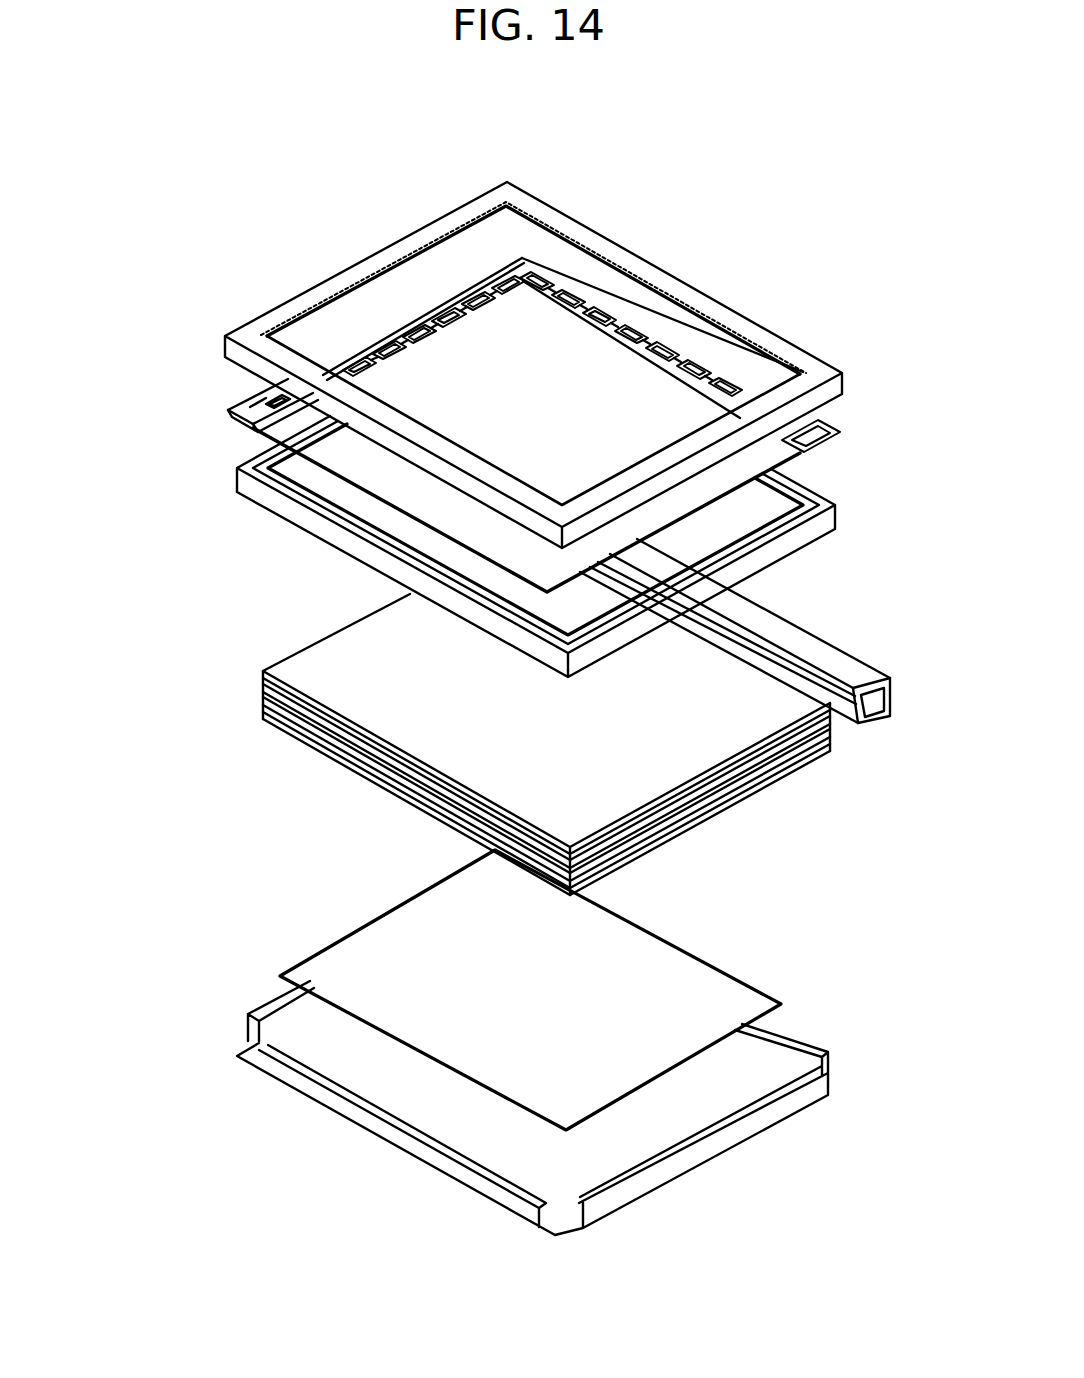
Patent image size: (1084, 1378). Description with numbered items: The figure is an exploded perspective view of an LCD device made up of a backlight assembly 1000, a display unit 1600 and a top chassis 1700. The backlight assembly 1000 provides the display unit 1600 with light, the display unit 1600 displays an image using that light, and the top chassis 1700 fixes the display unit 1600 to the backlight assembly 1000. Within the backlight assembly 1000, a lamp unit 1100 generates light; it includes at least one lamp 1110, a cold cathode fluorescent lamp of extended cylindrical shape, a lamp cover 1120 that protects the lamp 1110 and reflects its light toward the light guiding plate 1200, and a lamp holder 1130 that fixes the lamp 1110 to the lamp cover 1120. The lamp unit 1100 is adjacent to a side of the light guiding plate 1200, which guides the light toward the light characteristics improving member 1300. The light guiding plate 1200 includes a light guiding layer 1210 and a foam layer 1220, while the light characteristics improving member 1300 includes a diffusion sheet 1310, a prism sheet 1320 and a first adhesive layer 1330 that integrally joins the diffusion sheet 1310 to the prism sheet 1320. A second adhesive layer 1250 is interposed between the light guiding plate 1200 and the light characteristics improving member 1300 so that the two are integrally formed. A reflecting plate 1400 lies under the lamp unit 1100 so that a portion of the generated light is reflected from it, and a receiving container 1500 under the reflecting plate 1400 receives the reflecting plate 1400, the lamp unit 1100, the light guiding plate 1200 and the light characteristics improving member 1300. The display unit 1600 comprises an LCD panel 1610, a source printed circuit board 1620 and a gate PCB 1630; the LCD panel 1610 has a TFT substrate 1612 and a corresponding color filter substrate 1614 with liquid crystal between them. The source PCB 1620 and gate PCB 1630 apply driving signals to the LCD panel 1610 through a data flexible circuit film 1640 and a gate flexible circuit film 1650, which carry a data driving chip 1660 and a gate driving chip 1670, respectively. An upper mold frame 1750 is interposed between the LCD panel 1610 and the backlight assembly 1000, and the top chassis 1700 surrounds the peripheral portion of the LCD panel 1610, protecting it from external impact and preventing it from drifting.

The backlight assembly 1000 is at (105, 1155).
The lamp unit 1100 is at (764, 631).
The lamp 1110 is at (797, 667).
The lamp cover 1120 is at (775, 628).
The lamp holder 1130 is at (857, 698).
The light guiding plate 1200 is at (476, 789).
The light guiding layer 1210 is at (262, 717).
The foam layer 1220 is at (262, 705).
The second adhesive layer 1250 is at (257, 695).
The light characteristics improving member 1300 is at (467, 736).
The diffusion sheet 1310 is at (257, 686).
The prism sheet 1320 is at (260, 673).
The first adhesive layer 1330 is at (258, 680).
The reflecting plate 1400 is at (301, 968).
The receiving container 1500 is at (308, 1089).
The display unit 1600 is at (488, 381).
The LCD panel 1610 is at (205, 431).
The thin film transistor (TFT) substrate 1612 is at (280, 420).
The color filter substrate 1614 is at (282, 431).
The source printed circuit board (PCB) 1620 is at (643, 323).
The gate PCB 1630 is at (410, 310).
The data flexible circuit film 1640 is at (680, 340).
The gate flexible circuit film 1650 is at (458, 285).
The data driving chip 1660 is at (600, 293).
The gate driving chip 1670 is at (485, 275).
The top chassis 1700 is at (588, 235).
The upper mold frame 1750 is at (897, 475).